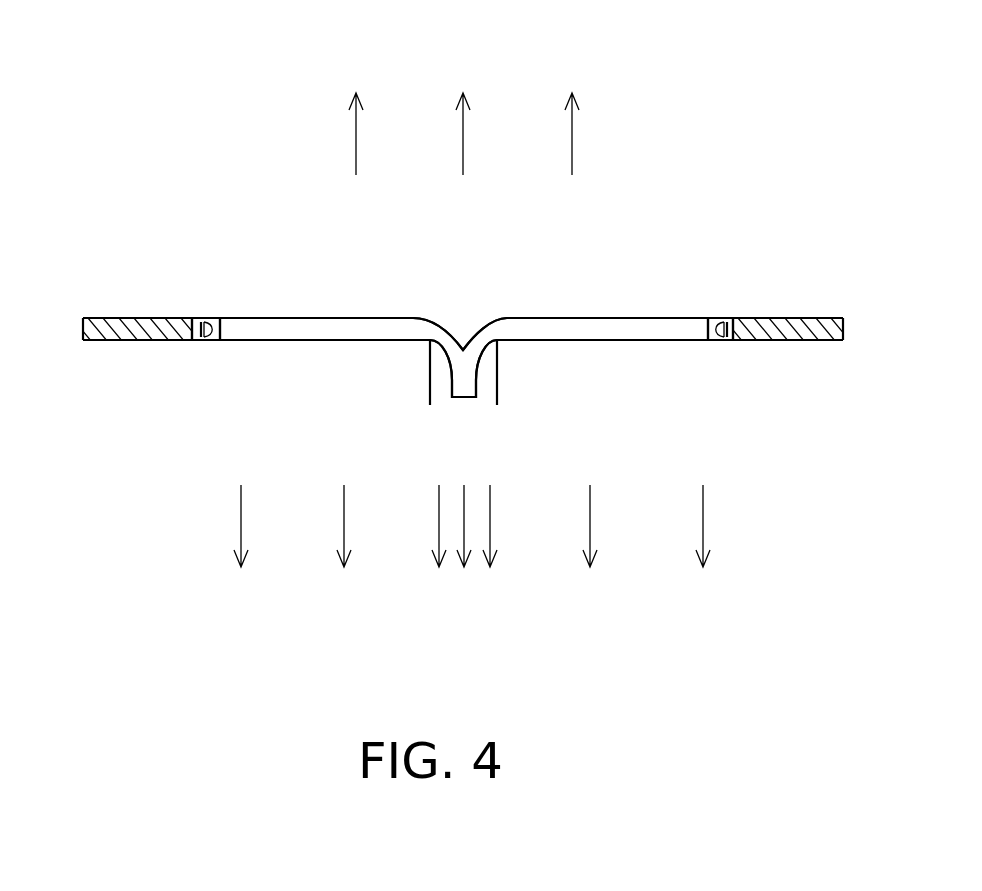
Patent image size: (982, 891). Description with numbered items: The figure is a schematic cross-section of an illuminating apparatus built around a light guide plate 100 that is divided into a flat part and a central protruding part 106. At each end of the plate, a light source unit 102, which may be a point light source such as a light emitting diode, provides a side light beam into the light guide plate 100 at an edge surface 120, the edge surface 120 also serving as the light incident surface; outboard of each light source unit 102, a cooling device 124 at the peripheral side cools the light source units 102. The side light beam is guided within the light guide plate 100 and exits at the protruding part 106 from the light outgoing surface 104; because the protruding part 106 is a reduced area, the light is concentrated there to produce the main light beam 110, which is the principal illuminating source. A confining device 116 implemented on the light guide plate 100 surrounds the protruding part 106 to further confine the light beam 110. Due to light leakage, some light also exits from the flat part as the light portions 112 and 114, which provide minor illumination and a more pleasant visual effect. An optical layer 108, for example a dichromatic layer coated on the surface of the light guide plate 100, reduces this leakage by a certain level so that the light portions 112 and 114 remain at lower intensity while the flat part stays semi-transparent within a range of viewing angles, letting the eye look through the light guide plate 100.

The light guide plate 100 is at (637, 325).
The light source unit 102 is at (207, 319).
The light outgoing surface 104 is at (463, 400).
The protruding part 106 is at (478, 305).
The optical layer 108 is at (358, 316).
The light beam 110 is at (496, 573).
The light portion 112 is at (225, 573).
The light portion 114 is at (280, 89).
The confining device 116 is at (497, 373).
The edge surface 120 is at (222, 329).
The cooling device 124 is at (118, 326).